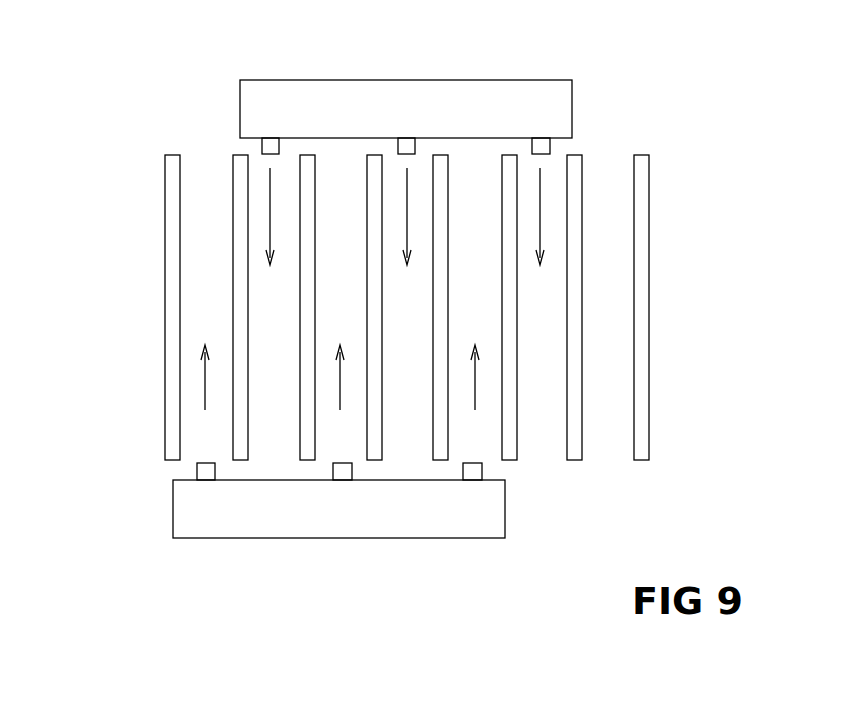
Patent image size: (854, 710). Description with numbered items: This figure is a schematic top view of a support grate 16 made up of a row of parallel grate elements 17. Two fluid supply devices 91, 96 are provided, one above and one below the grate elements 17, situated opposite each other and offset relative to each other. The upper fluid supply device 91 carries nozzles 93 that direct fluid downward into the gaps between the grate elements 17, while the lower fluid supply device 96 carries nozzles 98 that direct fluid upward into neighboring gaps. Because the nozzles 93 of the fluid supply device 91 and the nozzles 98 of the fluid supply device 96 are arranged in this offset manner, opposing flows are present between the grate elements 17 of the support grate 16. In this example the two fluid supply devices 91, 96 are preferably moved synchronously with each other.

The support grate 16 is at (680, 236).
The grate elements 17 is at (370, 270).
The fluid supply device 91 is at (557, 105).
The nozzles 93 is at (268, 148).
The fluid supply device 96 is at (185, 508).
The nozzles 98 is at (197, 470).